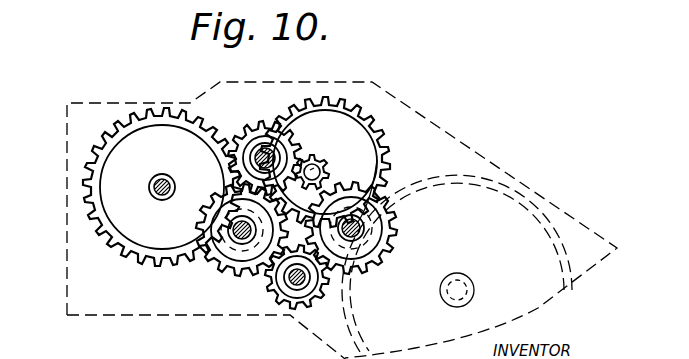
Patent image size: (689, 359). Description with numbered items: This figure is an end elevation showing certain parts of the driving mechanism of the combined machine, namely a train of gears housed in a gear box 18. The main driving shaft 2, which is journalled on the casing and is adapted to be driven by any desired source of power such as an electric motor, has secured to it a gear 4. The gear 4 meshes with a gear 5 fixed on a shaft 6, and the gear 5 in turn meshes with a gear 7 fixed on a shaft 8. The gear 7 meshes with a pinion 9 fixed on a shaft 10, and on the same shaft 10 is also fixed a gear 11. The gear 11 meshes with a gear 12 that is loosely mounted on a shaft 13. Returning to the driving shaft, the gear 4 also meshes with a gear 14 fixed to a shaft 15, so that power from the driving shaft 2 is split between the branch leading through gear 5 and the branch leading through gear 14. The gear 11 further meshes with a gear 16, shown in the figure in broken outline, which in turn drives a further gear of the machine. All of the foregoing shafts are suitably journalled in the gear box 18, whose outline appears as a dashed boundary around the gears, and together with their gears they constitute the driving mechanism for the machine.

The main driving shaft 2 is at (292, 287).
The gear 4 is at (267, 293).
The gear 5 is at (215, 267).
The shaft 6 is at (230, 230).
The gear 7 is at (252, 135).
The shaft 8 is at (250, 147).
The pinion 9 is at (311, 163).
The shaft 10 is at (329, 171).
The gear 11 is at (308, 97).
The gear 12 is at (148, 112).
The shaft 13 is at (168, 178).
The gear 14 is at (400, 235).
The shaft 15 is at (362, 222).
The gear 16 is at (547, 233).
The gear box 18 is at (72, 293).